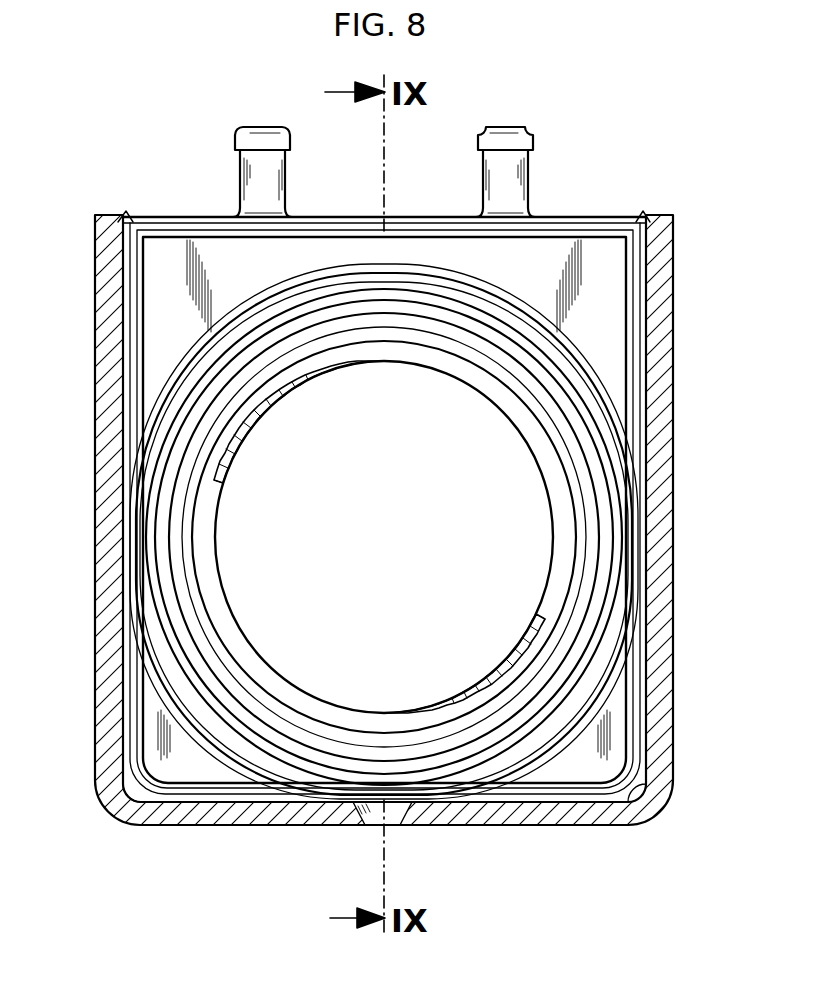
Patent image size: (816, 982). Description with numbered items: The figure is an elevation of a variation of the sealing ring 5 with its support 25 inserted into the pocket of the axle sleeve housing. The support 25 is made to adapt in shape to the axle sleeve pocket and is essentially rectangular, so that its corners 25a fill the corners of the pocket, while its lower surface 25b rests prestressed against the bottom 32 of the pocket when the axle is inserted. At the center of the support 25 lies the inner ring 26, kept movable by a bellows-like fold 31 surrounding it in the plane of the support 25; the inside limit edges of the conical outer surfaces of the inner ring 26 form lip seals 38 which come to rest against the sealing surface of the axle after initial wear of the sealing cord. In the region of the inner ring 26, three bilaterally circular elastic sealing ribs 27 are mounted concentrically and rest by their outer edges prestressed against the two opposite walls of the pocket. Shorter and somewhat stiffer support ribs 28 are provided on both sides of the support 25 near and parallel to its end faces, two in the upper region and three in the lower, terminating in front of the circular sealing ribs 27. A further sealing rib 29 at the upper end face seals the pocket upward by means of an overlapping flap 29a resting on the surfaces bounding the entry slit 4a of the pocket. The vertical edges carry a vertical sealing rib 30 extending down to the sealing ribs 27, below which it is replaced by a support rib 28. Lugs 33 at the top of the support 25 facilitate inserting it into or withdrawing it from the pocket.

The entry slit 4a is at (363, 219).
The sealing ring 5 is at (388, 570).
The support 25 is at (178, 284).
The corners 25a is at (186, 752).
The lower surface 25b is at (548, 806).
The inner ring 26 is at (214, 480).
The sealing ribs 27 is at (640, 558).
The support ribs 28 is at (622, 292).
The further sealing rib 29 is at (579, 219).
The overlapping flap 29a is at (124, 212).
The vertical sealing rib 30 is at (130, 310).
The bellows-like fold 31 is at (160, 536).
The bottom of the pocket 32 is at (136, 786).
The lugs 33 is at (245, 205).
The lip seals 38 is at (222, 580).